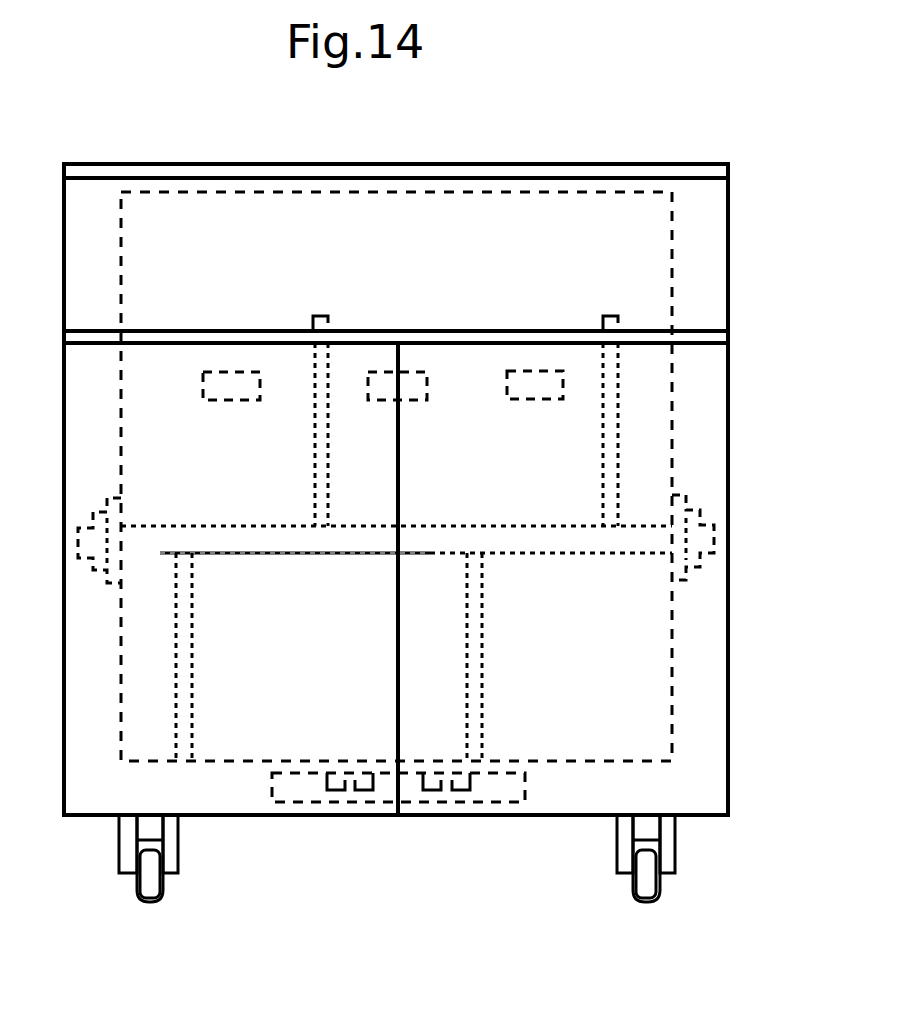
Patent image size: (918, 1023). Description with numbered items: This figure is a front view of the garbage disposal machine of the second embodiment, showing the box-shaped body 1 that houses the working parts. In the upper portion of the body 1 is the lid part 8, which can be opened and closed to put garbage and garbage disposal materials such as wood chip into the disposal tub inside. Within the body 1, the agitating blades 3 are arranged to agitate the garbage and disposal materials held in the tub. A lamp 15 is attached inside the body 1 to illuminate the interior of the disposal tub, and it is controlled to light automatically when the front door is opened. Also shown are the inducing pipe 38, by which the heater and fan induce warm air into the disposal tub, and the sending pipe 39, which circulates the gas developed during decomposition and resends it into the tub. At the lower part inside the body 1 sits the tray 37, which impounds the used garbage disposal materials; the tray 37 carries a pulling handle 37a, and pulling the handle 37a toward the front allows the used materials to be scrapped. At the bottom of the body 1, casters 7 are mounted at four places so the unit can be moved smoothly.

The body 1 is at (757, 360).
The lid part 8 is at (523, 162).
The lamp 15 is at (405, 400).
The inducing pipe 38 is at (232, 386).
The sending pipe 39 is at (535, 385).
The agitating blades 3 is at (192, 663).
The tray 37 is at (285, 805).
The pulling handle 37a is at (453, 787).
The casters 7 is at (660, 857).